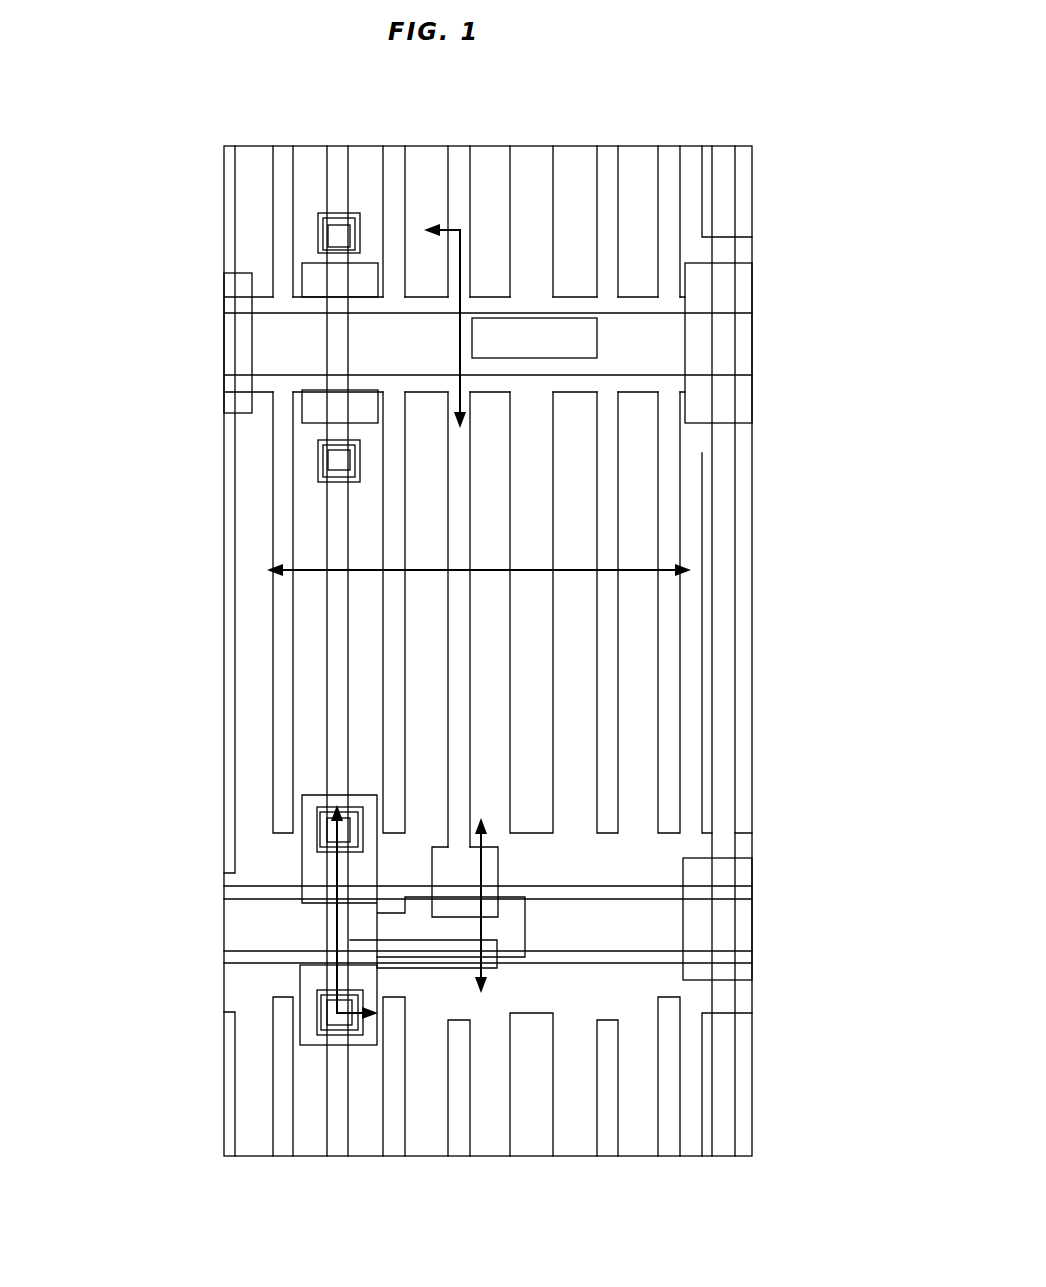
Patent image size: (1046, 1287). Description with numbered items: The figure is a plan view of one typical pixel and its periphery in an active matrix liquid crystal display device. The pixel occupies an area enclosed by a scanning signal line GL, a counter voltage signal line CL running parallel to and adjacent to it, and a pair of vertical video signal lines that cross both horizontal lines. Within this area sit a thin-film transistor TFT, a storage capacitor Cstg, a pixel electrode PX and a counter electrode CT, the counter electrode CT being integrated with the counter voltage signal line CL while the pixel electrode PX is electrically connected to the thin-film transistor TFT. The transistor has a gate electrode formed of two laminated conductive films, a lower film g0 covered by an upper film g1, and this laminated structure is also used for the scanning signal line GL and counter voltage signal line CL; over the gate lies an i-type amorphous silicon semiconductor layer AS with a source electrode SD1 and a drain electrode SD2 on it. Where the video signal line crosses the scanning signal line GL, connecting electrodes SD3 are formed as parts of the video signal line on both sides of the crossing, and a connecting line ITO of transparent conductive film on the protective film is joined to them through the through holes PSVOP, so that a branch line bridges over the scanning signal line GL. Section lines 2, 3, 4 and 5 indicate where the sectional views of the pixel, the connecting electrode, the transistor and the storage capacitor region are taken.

The counter electrode CT is at (385, 147).
The conductive film g1 is at (735, 300).
The conductive film g0 is at (735, 376).
The counter voltage signal line CL is at (827, 318).
The scanning signal line GL is at (826, 893).
The storage capacitor Cstg is at (538, 330).
The pixel electrode PX is at (448, 682).
The through hole PSVOP is at (323, 235).
The connecting electrode SD3 is at (323, 250).
The connecting line ITO is at (317, 283).
The thin-film transistor TFT is at (393, 713).
The i-type semiconductor layer AS is at (300, 408).
The source electrode SD1 is at (495, 862).
The drain electrode SD2 is at (423, 979).
The section line 2- 2 is at (475, 562).
The section line 3- 3 is at (367, 904).
The section line 4- 4 is at (484, 907).
The section line 5- 5 is at (439, 340).